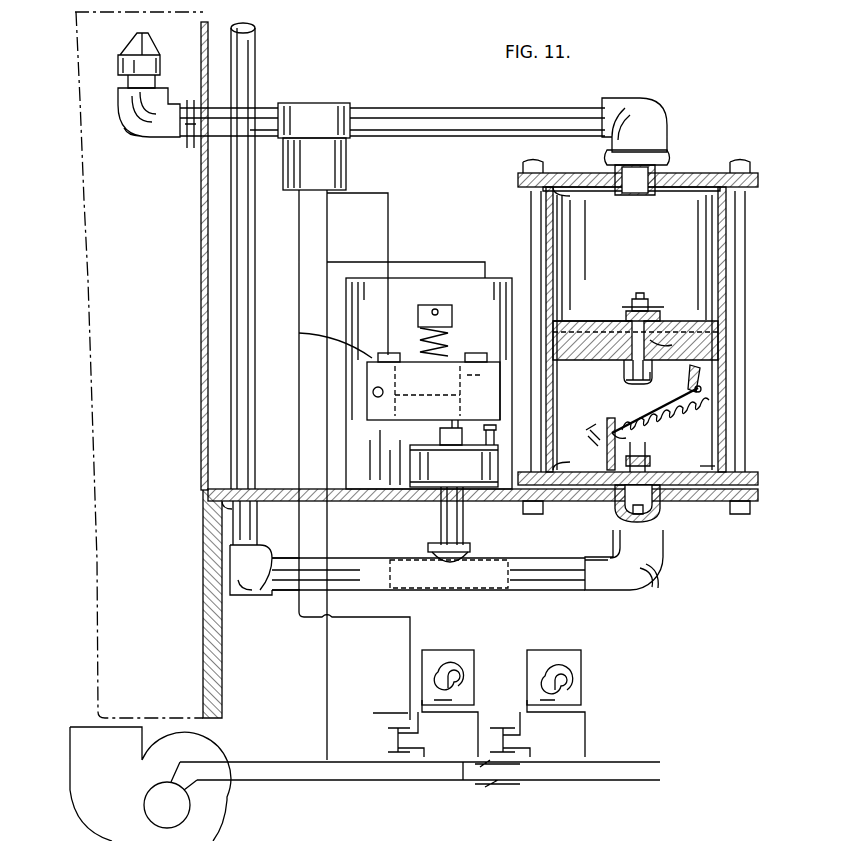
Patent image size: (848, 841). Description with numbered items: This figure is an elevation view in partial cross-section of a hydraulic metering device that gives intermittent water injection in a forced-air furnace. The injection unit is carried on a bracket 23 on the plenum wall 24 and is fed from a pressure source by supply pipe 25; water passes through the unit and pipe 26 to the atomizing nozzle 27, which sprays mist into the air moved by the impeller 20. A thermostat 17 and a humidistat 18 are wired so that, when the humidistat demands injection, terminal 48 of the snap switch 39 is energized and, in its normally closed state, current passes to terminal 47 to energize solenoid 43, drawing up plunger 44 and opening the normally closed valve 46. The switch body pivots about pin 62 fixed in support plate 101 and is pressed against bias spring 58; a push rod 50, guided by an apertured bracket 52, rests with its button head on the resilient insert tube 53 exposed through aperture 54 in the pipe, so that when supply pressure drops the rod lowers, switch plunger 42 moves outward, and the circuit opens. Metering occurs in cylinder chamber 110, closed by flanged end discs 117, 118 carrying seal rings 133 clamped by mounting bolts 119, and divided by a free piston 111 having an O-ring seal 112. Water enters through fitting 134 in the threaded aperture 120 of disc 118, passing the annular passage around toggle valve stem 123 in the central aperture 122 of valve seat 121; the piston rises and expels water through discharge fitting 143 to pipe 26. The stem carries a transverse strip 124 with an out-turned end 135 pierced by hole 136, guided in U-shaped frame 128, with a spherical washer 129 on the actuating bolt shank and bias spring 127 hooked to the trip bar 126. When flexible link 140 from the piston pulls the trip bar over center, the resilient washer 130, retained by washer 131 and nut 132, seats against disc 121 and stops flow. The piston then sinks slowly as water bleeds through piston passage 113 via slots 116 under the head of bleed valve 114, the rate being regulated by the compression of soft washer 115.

The thermostat control element 17 is at (603, 668).
The humidistat control element 18 is at (445, 655).
The air impeller 20 is at (166, 784).
The bracket 23 is at (222, 625).
The plenum wall 24 is at (201, 254).
The supply pipe 25 is at (242, 299).
The pipe 26 is at (218, 145).
The atomizing nozzle 27 is at (125, 55).
The snap switch 39 is at (312, 342).
The plunger 42 is at (433, 391).
The solenoid 43 is at (340, 176).
The plunger 44 is at (488, 425).
The solenoid-actuated valve 46 is at (328, 102).
The terminal 47 is at (386, 353).
The terminal 48 is at (476, 353).
The push rod 50 is at (445, 519).
The apertured bracket 52 is at (410, 470).
The tubular insert body 53 is at (470, 559).
The aperture 54 is at (440, 569).
The bias spring 58 is at (448, 320).
The pivot pin 62 is at (372, 392).
The support plate 101 is at (438, 258).
The hydraulic metering cylinder chamber 110 is at (636, 329).
The free piston 111 is at (705, 318).
The O-ring seal 112 is at (565, 320).
The piston passage 113 is at (668, 332).
The bleed valve 114 is at (630, 311).
The soft resilient washer 115 is at (648, 301).
The slots 116 is at (652, 372).
The flanged end disc 117 is at (690, 173).
The flanged end disc 118 is at (723, 505).
The mounting bolts 119 is at (745, 290).
The threaded central aperture 120 is at (690, 493).
The valve seat 121 is at (712, 470).
The central aperture 122 is at (636, 448).
The toggle valve stem 123 is at (560, 470).
The transverse strip 124 is at (656, 458).
The trip bar 126 is at (672, 410).
The bias spring 127 is at (690, 395).
The U-shaped frame element 128 is at (601, 444).
The spherical washer 129 is at (600, 478).
The resilient washer 130 is at (620, 488).
The washer 131 is at (653, 507).
The nut 132 is at (660, 522).
The resilient seal rings 133 is at (575, 190).
The fitting 134 is at (615, 527).
The out-turned end 135 is at (660, 393).
The transverse hole 136 is at (642, 379).
The flexible link 140 is at (700, 378).
The discharge fitting 143 is at (660, 125).